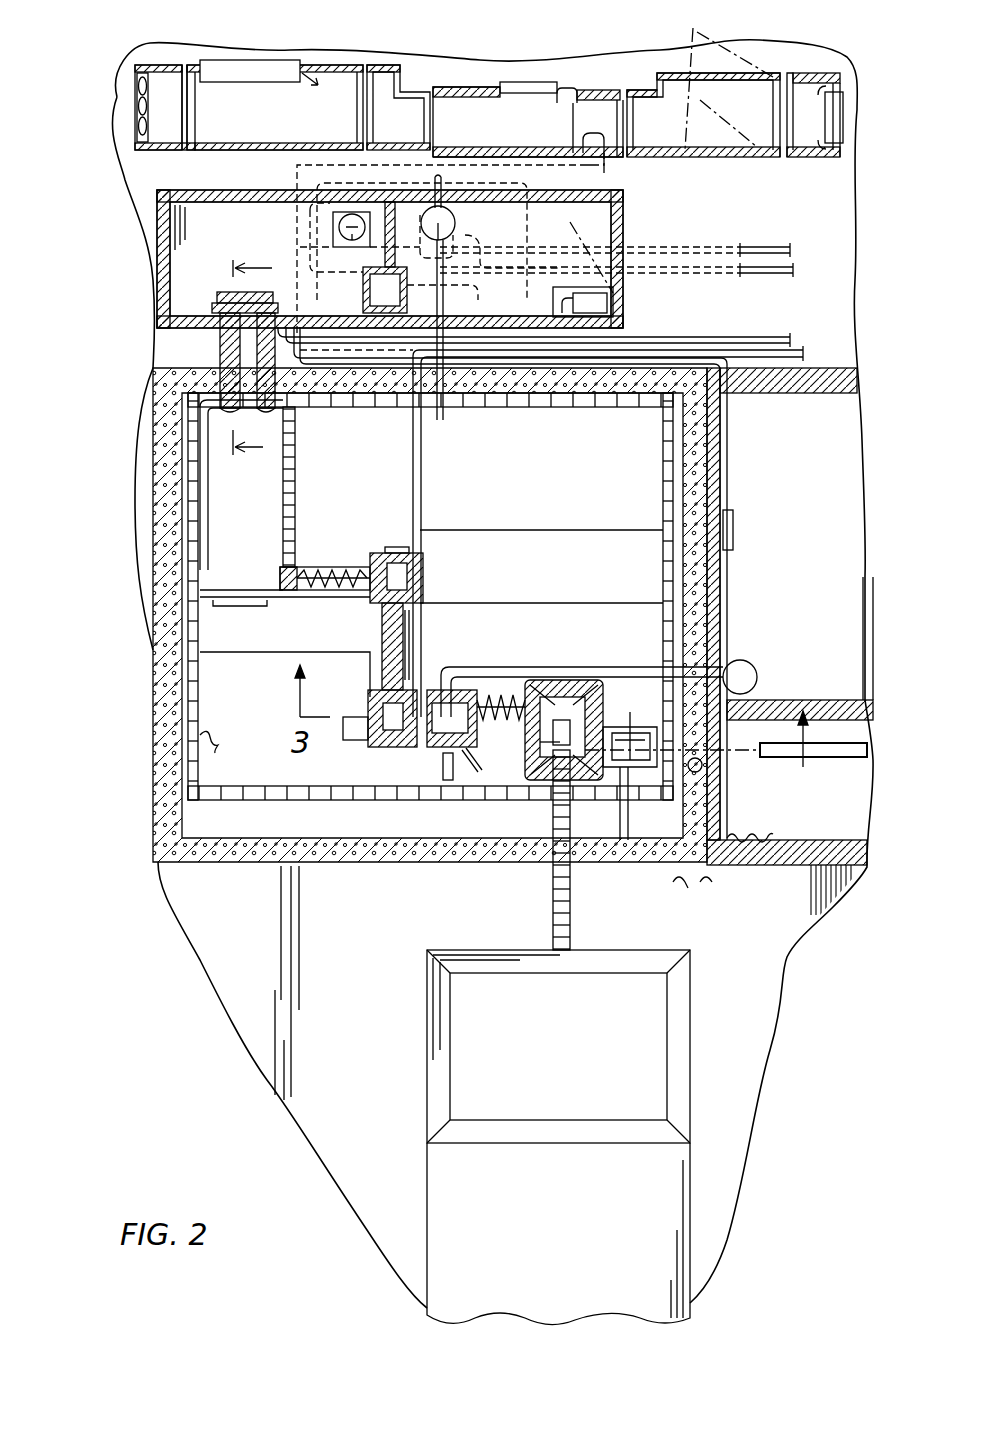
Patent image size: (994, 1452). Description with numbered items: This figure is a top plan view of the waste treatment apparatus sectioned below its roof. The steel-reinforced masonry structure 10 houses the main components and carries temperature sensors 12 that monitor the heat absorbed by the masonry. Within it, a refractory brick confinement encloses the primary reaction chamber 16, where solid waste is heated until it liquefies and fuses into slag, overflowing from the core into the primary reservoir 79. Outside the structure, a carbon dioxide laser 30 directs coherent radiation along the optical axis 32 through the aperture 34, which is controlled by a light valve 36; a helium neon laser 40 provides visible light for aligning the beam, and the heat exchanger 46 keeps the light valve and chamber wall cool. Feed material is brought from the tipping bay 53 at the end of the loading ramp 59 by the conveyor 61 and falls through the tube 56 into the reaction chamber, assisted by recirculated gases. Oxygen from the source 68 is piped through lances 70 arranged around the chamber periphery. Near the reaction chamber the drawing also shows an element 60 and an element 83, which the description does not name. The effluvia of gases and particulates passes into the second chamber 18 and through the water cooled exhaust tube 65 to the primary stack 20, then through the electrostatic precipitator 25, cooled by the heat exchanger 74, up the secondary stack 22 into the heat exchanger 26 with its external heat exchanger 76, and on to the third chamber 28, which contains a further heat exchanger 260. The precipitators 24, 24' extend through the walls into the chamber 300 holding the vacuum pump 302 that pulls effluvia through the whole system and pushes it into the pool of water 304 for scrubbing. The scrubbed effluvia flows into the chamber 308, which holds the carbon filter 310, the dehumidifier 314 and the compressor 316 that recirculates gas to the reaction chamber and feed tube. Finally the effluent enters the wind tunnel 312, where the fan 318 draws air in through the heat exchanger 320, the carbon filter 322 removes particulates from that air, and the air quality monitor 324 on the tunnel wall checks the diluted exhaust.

The masonry structure 10 is at (153, 693).
The temperature sensors 12 is at (667, 867).
The primary reaction chamber 16 is at (557, 697).
The second chamber 18 is at (440, 688).
The primary stack 20 is at (380, 710).
The secondary stack 22 is at (385, 553).
The electrostatic precipitator 24 is at (175, 317).
The electrostatic precipitator 24' is at (169, 362).
The electrostatic precipitator 25 is at (382, 625).
The heat exchanger 26 is at (320, 567).
The third chamber 28 is at (295, 461).
The carbon dioxide laser 30 is at (852, 760).
The optical axis 32 is at (725, 742).
The aperture 34 is at (703, 768).
The light valve 36 is at (727, 715).
The helium neon laser 40 is at (227, 752).
The heat exchanger 46 is at (750, 845).
The tipping bay 53 is at (663, 1018).
The tube 56 is at (545, 742).
The loading ramp 59 is at (585, 1218).
The link 60 is at (480, 773).
The conveyor 61 is at (553, 894).
The water cooled exhaust tube 65 is at (497, 697).
The oxygen source 68 is at (748, 660).
The lances 70 is at (603, 697).
The heat exchanger 74 is at (420, 630).
The external heat exchanger 76 is at (333, 590).
The primary reservoir 79 is at (573, 697).
The stop 83 is at (440, 770).
The heat exchanger 260 is at (200, 540).
The chamber 300 is at (212, 216).
The vacuum pump 302 is at (333, 235).
The pool of water 304 is at (397, 352).
The chamber 308 is at (573, 220).
The carbon filter 310 is at (403, 285).
The wind tunnel 312 is at (342, 132).
The dehumidifier 314 is at (442, 408).
The compressor 316 is at (622, 304).
The fan 318 is at (137, 88).
The heat exchanger 320 is at (817, 155).
The carbon filter 322 is at (570, 90).
The air quality monitor 324 is at (280, 66).